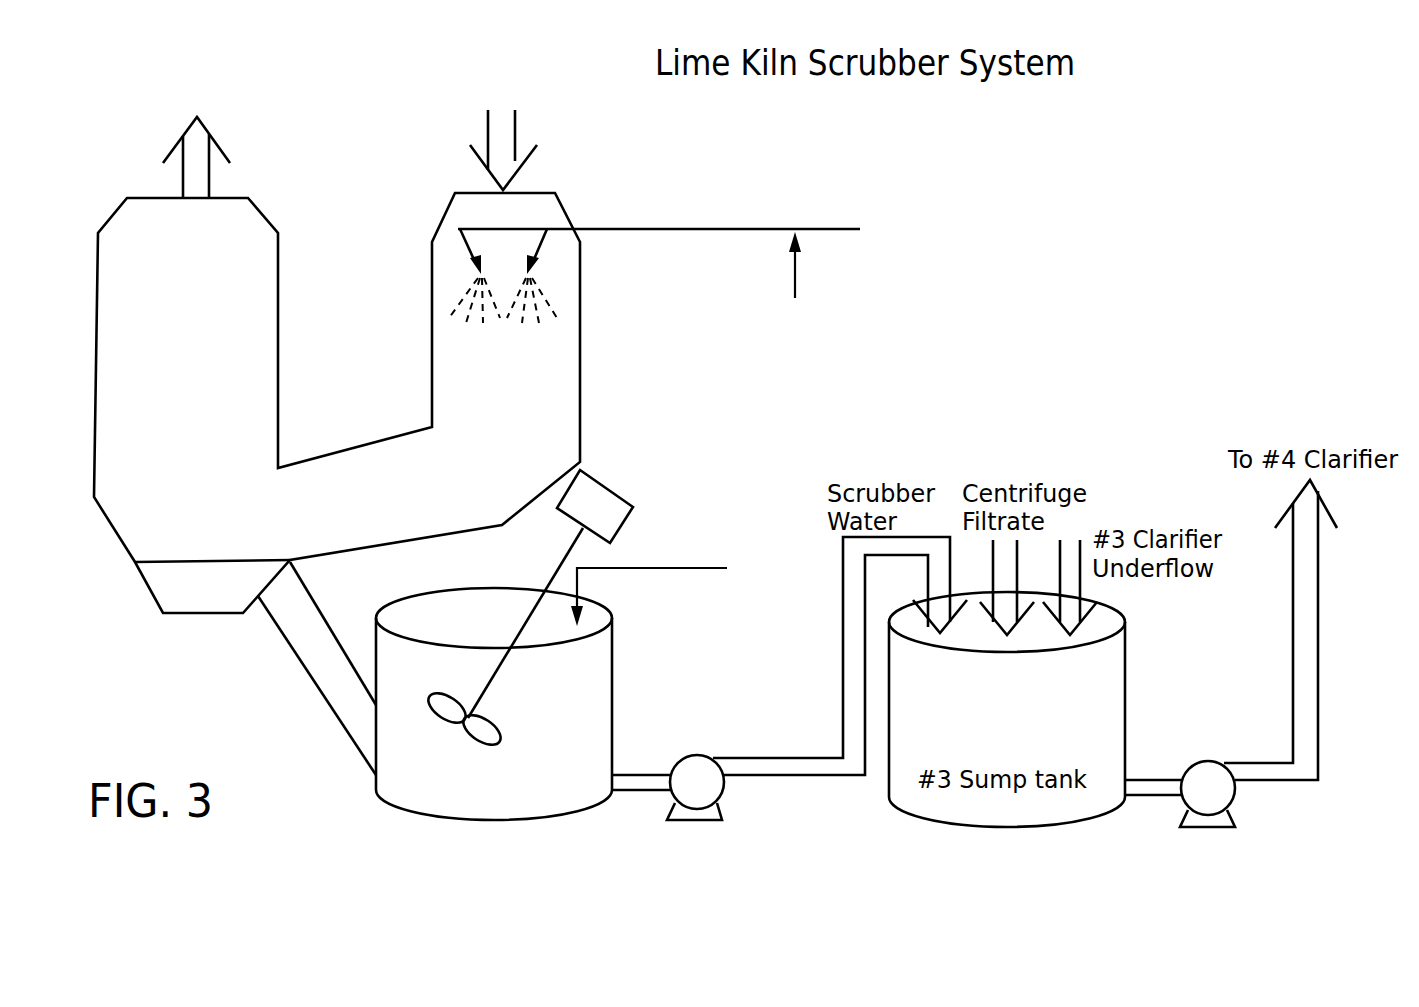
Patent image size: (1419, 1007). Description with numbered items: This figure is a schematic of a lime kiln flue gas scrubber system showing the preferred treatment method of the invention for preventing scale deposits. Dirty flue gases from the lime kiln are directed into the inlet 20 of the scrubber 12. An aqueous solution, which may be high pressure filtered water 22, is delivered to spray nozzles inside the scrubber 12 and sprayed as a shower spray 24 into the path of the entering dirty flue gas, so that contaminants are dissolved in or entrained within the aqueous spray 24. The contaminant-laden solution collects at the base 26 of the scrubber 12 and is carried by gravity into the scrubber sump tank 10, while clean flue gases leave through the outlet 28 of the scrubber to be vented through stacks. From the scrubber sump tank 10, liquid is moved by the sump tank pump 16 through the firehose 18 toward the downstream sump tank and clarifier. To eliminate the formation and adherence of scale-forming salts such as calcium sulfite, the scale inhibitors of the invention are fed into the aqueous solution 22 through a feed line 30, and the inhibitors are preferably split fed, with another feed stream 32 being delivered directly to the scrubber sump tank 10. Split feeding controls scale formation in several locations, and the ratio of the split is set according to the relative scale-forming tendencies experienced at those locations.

The scrubber sump tank 10 is at (556, 710).
The scrubber 12 is at (197, 405).
The sump tank pump 16 is at (689, 757).
The firehose 18 is at (843, 640).
The inlet 20 is at (522, 188).
The high pressure filtered water 22 is at (678, 210).
The shower spray 24 is at (523, 303).
The base 26 is at (222, 600).
The outlet 28 is at (213, 195).
The feed line 30 is at (797, 282).
The feed stream 32 is at (668, 591).